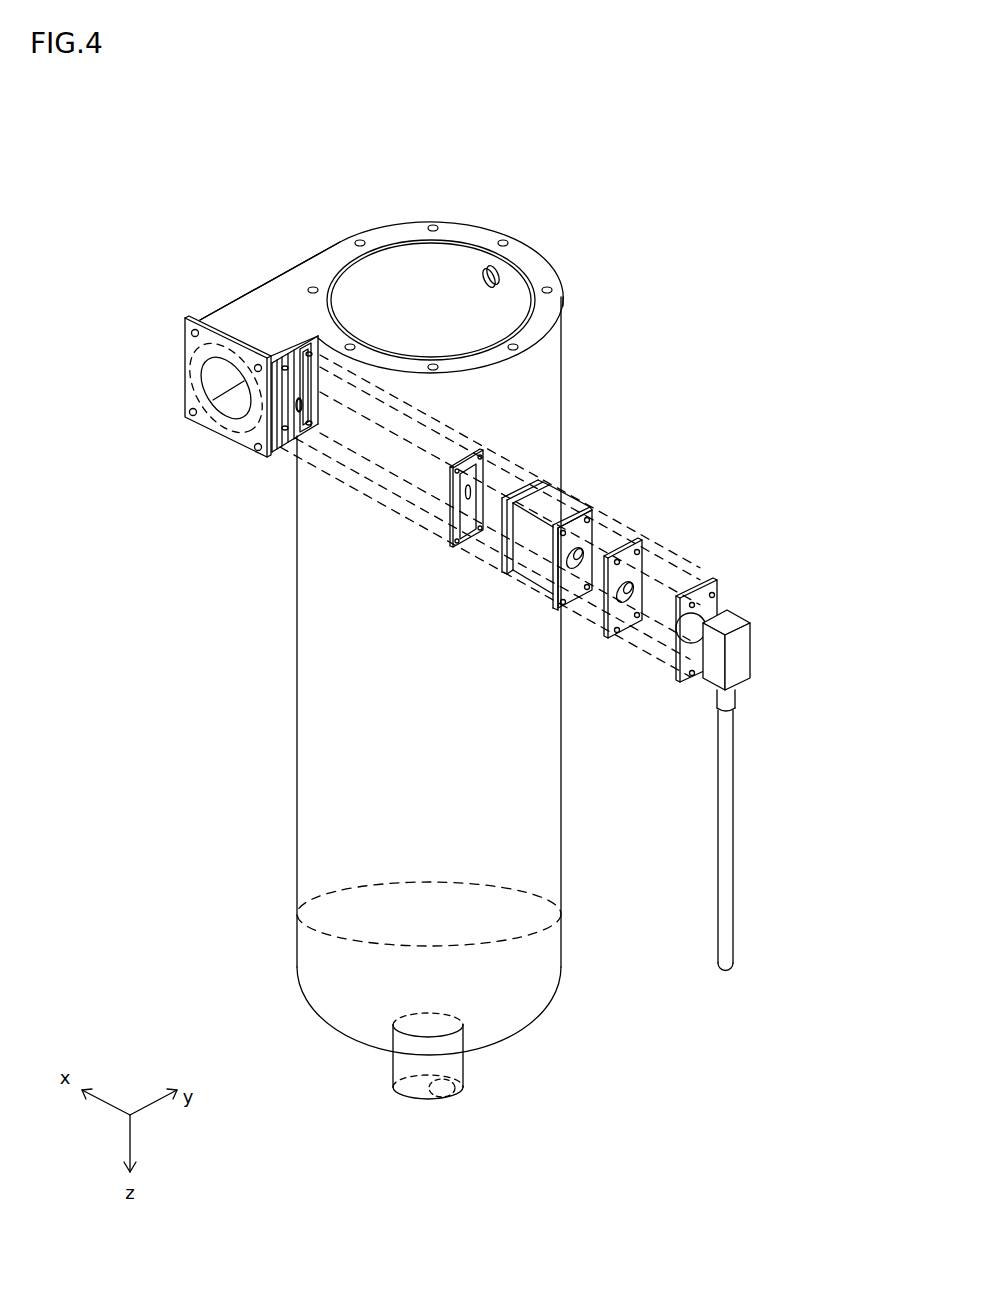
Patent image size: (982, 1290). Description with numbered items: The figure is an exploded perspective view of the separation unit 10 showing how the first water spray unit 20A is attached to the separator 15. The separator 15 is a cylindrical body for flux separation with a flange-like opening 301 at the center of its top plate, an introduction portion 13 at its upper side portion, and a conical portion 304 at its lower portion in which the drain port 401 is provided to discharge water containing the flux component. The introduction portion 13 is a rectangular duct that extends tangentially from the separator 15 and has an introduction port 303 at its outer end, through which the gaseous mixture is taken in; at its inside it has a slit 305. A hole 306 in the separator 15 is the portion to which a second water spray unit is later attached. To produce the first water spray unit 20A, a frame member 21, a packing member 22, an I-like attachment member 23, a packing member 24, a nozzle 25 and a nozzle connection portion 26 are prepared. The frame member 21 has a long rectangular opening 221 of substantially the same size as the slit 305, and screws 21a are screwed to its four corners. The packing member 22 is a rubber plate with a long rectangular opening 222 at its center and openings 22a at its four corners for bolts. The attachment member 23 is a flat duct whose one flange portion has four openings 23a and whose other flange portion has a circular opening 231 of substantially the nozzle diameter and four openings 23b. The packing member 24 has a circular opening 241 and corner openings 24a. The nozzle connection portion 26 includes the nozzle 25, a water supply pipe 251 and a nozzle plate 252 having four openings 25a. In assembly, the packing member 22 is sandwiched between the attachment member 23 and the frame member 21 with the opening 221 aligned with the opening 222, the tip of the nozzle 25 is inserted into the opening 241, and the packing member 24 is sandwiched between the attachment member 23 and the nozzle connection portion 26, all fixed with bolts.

The separation unit 10 is at (63, 174).
The introduction portion 13 is at (270, 292).
The separator 15 is at (225, 706).
The opening 301 is at (527, 283).
The introduction port 303 is at (221, 403).
The conical portion 304 is at (400, 1069).
The hole 306 is at (537, 245).
The drain port 401 is at (455, 1095).
The first water spray unit 20A is at (683, 374).
The frame member 21 is at (258, 454).
The screws 21a is at (311, 439).
The opening 221 is at (298, 440).
The slit 305 is at (274, 486).
The packing member 22 is at (451, 536).
The openings 22a is at (499, 470).
The opening 222 is at (513, 467).
The I-like attachment member 23 is at (531, 566).
The openings 23a is at (561, 505).
The openings 23b is at (613, 536).
The circular opening 231 is at (627, 531).
The packing member 24 is at (609, 625).
The openings 24a is at (663, 572).
The circular opening 241 is at (674, 567).
The nozzle 25 is at (673, 661).
The openings 25a is at (692, 668).
The nozzle plate 252 is at (739, 586).
The nozzle connection portion 26 is at (760, 656).
The water supply pipe 251 is at (762, 830).